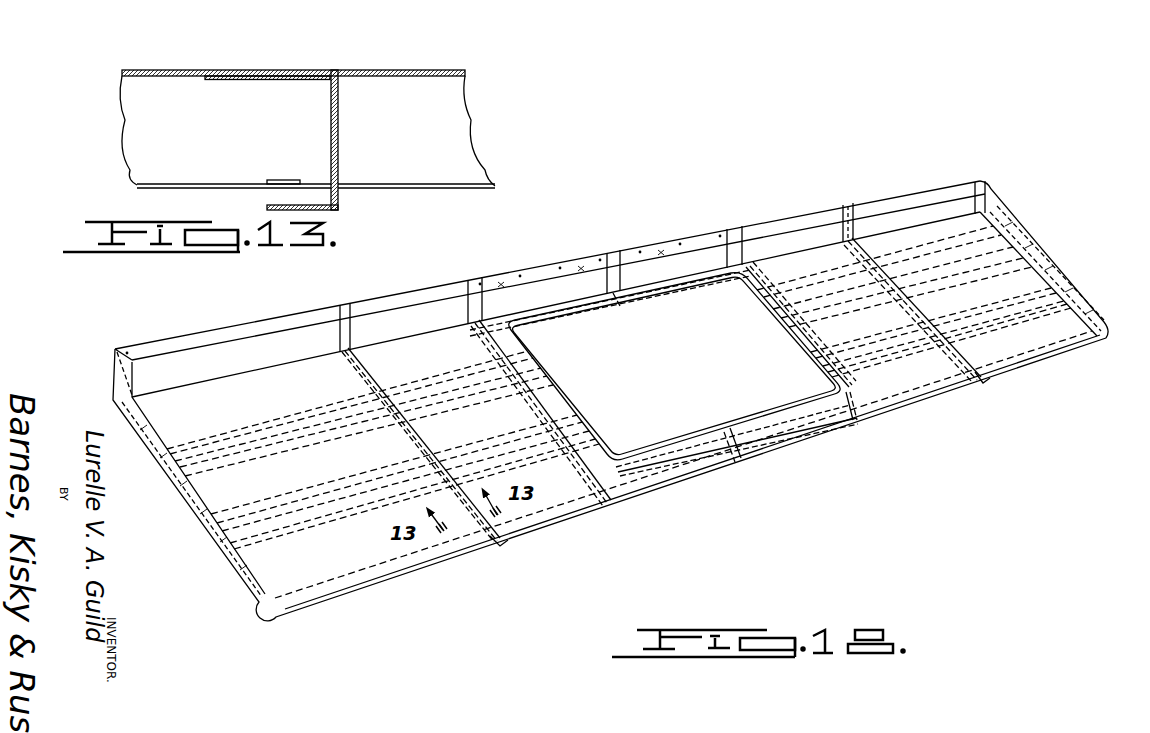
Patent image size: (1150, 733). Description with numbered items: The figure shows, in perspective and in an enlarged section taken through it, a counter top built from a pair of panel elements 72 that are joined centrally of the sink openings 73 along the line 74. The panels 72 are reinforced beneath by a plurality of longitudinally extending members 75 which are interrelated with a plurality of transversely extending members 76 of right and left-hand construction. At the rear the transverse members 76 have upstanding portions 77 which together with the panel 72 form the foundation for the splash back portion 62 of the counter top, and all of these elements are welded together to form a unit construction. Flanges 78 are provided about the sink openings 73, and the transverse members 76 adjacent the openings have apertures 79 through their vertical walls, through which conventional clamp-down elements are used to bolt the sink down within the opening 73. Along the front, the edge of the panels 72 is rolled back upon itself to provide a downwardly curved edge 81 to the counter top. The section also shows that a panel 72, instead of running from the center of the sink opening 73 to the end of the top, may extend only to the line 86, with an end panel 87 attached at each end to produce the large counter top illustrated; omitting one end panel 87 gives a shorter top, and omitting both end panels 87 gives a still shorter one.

In FIG. 12, the splash back portion 62 is at (815, 222).
In FIG. 13, the panel element 72 is at (420, 70).
In FIG. 12, the panel element 72 is at (430, 308).
In FIG. 12, the sink opening 73 is at (700, 300).
In FIG. 12, the line 74 is at (613, 258).
In FIG. 13, the longitudinally extending member 75 is at (450, 105).
In FIG. 12, the longitudinally extending member 75 is at (537, 348).
In FIG. 13, the transversely extending member 76 is at (339, 137).
In FIG. 12, the transversely extending member 76 is at (375, 337).
In FIG. 12, the upstanding portion 77 is at (987, 188).
In FIG. 12, the flange 78 is at (562, 374).
In FIG. 12, the aperture 79 is at (738, 301).
In FIG. 12, the downwardly curved edge 81 is at (907, 393).
In FIG. 13, the line 86 is at (302, 70).
In FIG. 12, the line 86 is at (494, 540).
In FIG. 13, the end panel 87 is at (226, 48).
In FIG. 12, the end panel 87 is at (322, 572).